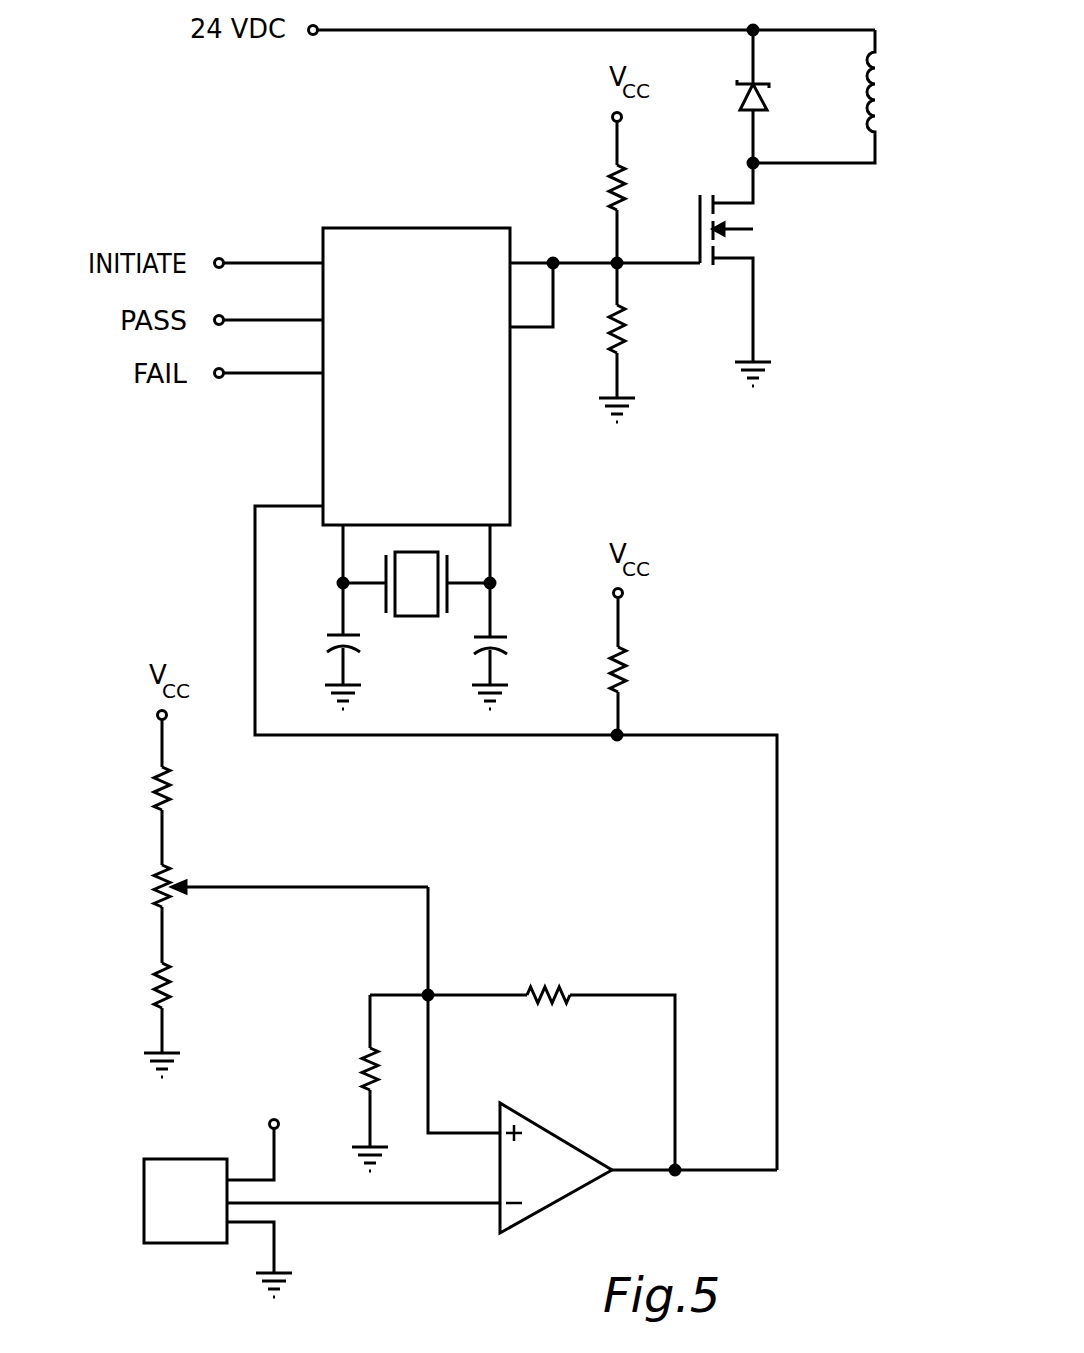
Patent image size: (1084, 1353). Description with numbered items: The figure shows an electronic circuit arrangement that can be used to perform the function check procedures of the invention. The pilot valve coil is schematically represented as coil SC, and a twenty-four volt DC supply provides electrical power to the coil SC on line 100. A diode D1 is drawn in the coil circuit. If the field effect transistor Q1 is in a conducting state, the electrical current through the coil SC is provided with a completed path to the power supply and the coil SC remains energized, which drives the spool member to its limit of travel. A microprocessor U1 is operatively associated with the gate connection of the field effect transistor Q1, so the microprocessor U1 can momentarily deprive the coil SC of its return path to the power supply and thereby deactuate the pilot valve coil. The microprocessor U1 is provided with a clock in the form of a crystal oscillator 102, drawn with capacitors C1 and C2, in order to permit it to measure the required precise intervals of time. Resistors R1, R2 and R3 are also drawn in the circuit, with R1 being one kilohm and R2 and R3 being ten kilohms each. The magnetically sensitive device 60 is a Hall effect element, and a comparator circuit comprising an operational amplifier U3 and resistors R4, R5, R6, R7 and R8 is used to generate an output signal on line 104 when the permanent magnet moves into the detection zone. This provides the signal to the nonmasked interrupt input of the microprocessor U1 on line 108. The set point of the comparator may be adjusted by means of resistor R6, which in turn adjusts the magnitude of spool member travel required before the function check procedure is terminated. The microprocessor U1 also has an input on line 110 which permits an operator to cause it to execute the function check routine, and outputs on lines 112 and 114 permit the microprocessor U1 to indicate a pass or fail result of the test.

The line 100 is at (532, 30).
The line 110 is at (245, 263).
The line 112 is at (248, 320).
The line 114 is at (240, 373).
The line 108 is at (255, 541).
The crystal oscillator 102 is at (410, 617).
The line 104 is at (393, 1204).
The magnetically sensitive device 60 is at (204, 1244).
The microprocessor U1 is at (416, 376).
The operational amplifier U3 is at (638, 1168).
The field effect transistor Q1 is at (697, 207).
The diode D1 is at (768, 98).
The coil SC is at (880, 100).
The resistor R1 is at (612, 196).
The resistor R2 is at (622, 335).
The resistor R3 is at (624, 674).
The resistor R4 is at (533, 993).
The resistor R5 is at (172, 795).
The resistor R6 is at (158, 884).
The resistor R7 is at (172, 978).
The resistor R8 is at (364, 1074).
The capacitor C1 is at (498, 638).
The capacitor C2 is at (332, 636).